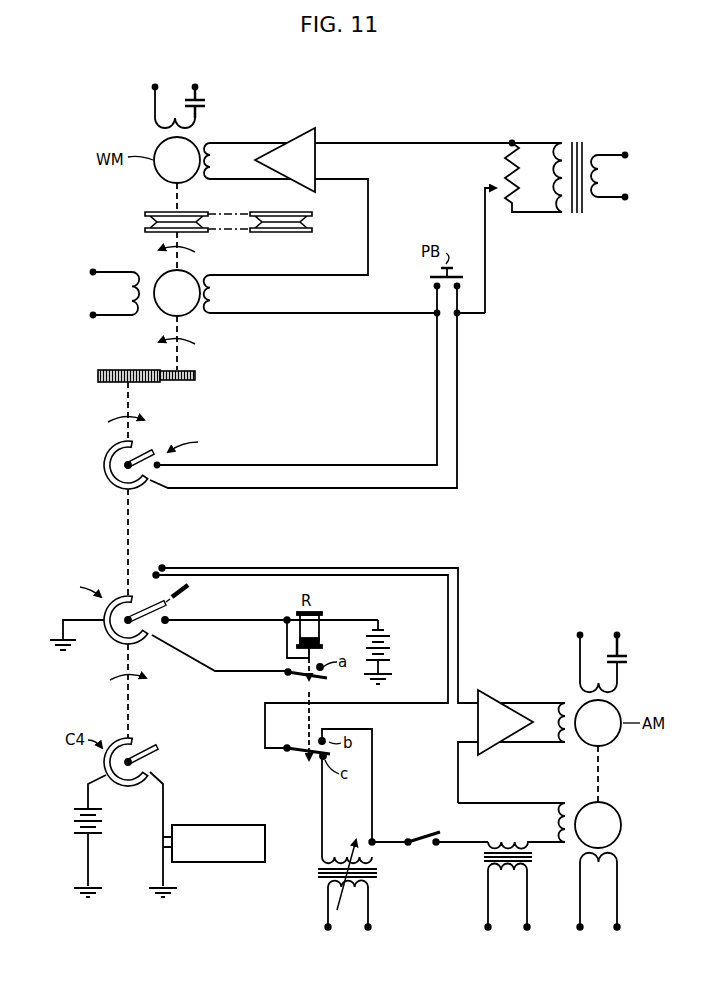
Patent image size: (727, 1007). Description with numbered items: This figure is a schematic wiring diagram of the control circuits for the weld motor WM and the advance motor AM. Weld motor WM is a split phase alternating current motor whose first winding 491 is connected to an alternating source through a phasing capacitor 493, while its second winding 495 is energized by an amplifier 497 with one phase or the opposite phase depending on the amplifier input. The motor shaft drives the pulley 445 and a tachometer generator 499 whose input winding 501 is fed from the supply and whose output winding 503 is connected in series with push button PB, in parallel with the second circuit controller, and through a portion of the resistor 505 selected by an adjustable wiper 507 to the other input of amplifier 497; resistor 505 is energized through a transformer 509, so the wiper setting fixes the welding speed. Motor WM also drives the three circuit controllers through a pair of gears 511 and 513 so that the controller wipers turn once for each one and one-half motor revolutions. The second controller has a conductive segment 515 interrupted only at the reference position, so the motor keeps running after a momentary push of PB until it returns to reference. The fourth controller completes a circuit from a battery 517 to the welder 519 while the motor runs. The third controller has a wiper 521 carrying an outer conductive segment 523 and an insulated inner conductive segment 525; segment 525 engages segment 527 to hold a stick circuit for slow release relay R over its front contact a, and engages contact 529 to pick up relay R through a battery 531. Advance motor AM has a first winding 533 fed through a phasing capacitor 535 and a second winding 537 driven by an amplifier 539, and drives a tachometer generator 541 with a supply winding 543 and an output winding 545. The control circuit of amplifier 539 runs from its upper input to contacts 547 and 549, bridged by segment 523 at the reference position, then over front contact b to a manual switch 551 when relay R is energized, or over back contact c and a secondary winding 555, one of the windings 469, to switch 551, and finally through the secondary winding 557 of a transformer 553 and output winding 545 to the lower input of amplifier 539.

The pulley 445 is at (160, 211).
The windings 469 is at (312, 879).
The first winding 491 is at (160, 122).
The phasing capacitor 493 is at (208, 104).
The second winding 495 is at (214, 158).
The amplifier 497 is at (318, 169).
The tachometer generator 499 is at (198, 278).
The input winding 501 is at (140, 274).
The output winding 503 is at (216, 295).
The resistor 505 is at (505, 163).
The adjustable wiper 507 is at (494, 187).
The transformer 509 is at (582, 131).
The gear 511 is at (195, 376).
The gear 513 is at (98, 376).
The conductive segment 515 is at (103, 474).
The battery 517 is at (75, 818).
The welder 519 is at (233, 824).
The wiper 521 is at (180, 605).
The outer conductive segment 523 is at (189, 585).
The inner conductive segment 525 is at (134, 644).
The segment 527 is at (114, 644).
The contact 529 is at (167, 622).
The battery 531 is at (391, 655).
The first winding 533 is at (603, 683).
The phasing capacitor 535 is at (628, 650).
The second winding 537 is at (550, 728).
The amplifier 539 is at (477, 730).
The tachometer generator 541 is at (623, 825).
The supply winding 543 is at (615, 867).
The output winding 545 is at (564, 828).
The contact 547 is at (163, 567).
The contact 549 is at (155, 573).
The manual switch 551 is at (428, 830).
The transformer 553 is at (481, 861).
The secondary winding 555 is at (344, 857).
The secondary winding 557 is at (494, 839).